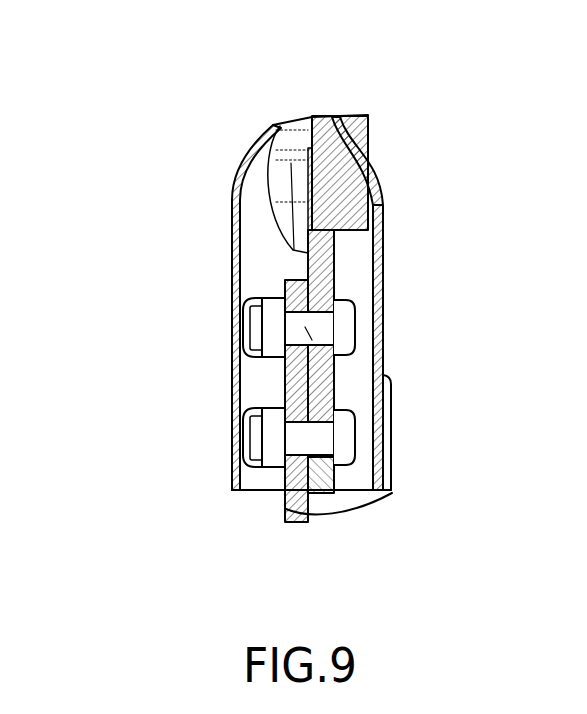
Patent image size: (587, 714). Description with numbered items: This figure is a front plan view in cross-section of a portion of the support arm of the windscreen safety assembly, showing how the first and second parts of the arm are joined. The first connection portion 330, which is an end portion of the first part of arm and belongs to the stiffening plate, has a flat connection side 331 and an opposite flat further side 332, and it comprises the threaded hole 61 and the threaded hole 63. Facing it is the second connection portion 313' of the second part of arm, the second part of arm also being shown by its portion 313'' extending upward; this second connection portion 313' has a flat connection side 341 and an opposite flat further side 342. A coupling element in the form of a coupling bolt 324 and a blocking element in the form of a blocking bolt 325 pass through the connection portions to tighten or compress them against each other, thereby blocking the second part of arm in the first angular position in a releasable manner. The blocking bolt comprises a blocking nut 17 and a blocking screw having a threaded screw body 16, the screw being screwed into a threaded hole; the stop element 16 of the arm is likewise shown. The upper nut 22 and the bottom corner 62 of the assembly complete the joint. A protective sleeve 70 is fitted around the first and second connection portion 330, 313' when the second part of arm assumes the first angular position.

The protective sleeve 70 is at (252, 160).
The connection side 341 is at (273, 124).
The second sub-portion of second part of arm 313'' is at (386, 112).
The further side 342 is at (340, 251).
The second connection portion 313' is at (432, 347).
The nut 22 is at (338, 296).
The stop element 16 is at (338, 358).
The threaded hole 63 is at (285, 280).
The blocking nut 17 is at (272, 297).
The blocking bolt 325 is at (244, 327).
The first connection portion 330 is at (282, 393).
The coupling bolt 324 is at (247, 443).
The threaded hole 61 is at (284, 494).
The further side 332 is at (288, 510).
The connection side 331 is at (317, 517).
The bottom corner 62 is at (393, 492).